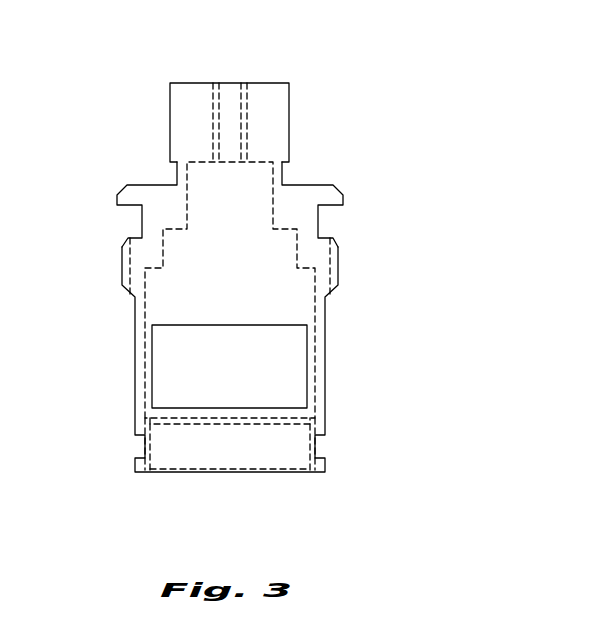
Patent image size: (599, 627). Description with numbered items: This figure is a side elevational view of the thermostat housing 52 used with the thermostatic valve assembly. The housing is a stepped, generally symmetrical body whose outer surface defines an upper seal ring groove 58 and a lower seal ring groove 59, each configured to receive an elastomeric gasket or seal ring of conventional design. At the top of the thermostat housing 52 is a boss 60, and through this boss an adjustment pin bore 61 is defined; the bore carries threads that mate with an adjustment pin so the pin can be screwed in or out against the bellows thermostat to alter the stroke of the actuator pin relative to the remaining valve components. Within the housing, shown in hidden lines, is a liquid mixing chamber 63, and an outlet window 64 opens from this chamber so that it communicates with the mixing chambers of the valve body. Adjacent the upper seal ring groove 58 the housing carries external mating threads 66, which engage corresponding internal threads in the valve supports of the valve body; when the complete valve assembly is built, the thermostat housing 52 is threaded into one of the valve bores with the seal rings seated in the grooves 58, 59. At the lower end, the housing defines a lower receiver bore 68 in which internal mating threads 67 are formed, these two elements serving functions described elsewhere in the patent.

The thermostat housing 52 is at (342, 260).
The upper seal ring groove 58 is at (330, 208).
The lower seal ring groove 59 is at (320, 440).
The boss 60 is at (270, 117).
The adjustment pin bore 61 is at (240, 100).
The liquid mixing chamber 63 is at (292, 300).
The outlet window 64 is at (220, 325).
The external mating threads 66 is at (123, 266).
The internal mating threads 67 is at (147, 432).
The lower receiver bore 68 is at (307, 447).